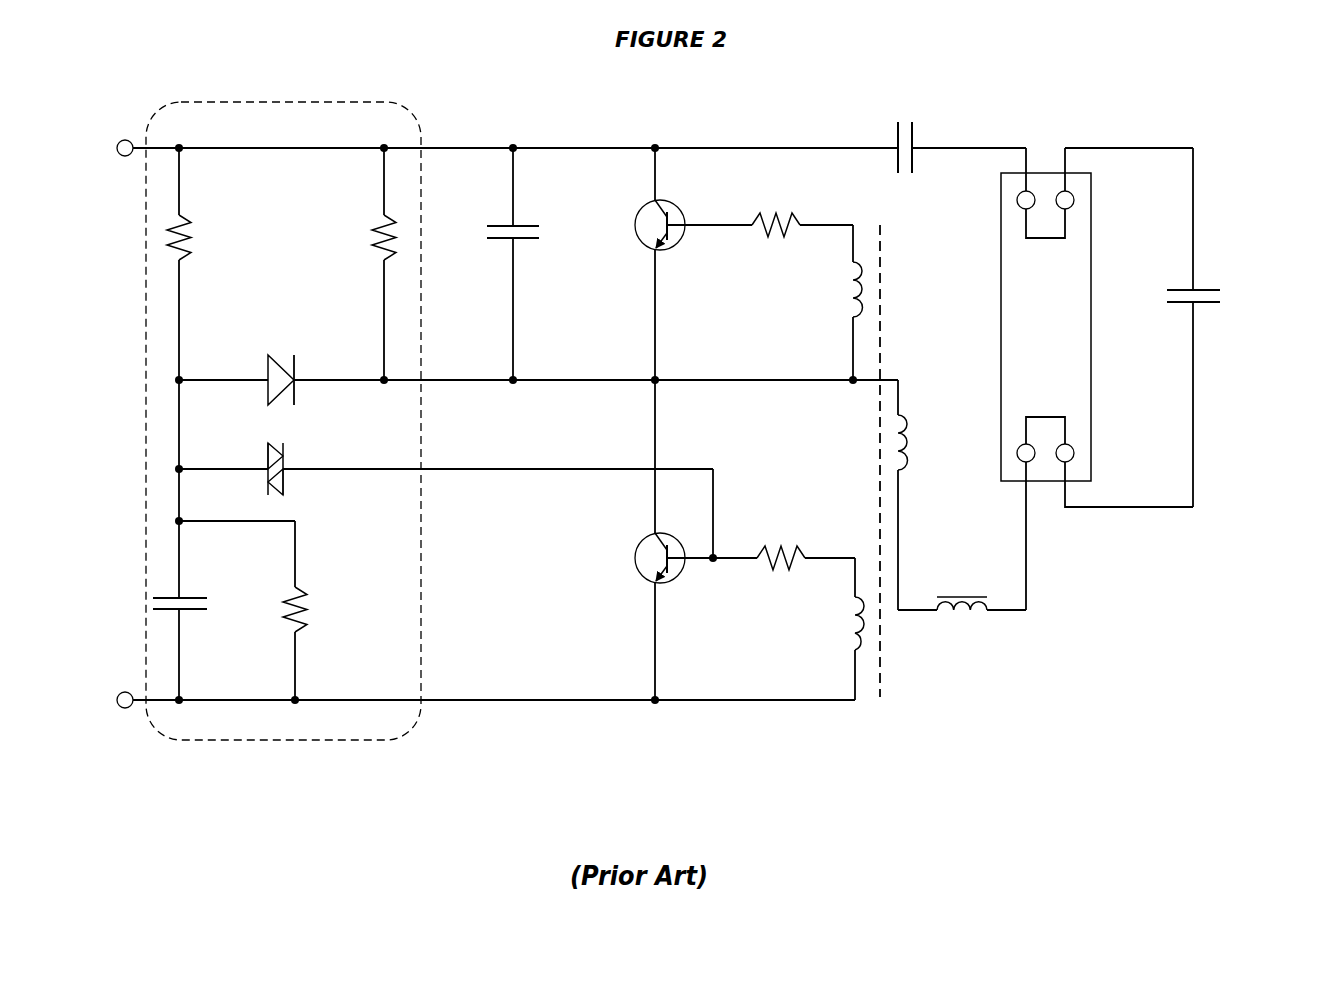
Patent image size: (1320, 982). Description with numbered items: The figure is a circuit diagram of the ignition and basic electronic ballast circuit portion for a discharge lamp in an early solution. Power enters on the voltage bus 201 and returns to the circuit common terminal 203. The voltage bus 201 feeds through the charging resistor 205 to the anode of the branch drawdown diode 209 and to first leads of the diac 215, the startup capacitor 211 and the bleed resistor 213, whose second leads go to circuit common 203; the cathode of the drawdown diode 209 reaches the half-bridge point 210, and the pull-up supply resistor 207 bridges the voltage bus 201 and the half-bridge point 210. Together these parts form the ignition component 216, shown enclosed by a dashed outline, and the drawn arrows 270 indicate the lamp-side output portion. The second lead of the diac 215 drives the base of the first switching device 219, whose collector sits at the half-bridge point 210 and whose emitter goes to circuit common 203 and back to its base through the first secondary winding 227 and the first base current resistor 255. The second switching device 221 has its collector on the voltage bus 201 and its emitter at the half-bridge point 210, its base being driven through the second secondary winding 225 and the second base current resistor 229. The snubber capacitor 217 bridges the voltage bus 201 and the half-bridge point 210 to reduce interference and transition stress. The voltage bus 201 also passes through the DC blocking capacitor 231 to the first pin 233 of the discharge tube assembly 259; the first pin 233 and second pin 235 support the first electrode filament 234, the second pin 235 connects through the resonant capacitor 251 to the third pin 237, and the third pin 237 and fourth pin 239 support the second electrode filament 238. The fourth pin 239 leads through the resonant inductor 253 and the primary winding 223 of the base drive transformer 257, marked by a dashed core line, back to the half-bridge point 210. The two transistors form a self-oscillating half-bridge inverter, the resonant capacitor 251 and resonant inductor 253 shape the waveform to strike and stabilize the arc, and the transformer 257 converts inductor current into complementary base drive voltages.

The voltage bus 201 is at (112, 148).
The circuit common terminal 203 is at (112, 700).
The charging resistor 205 is at (193, 216).
The pull-up supply resistor 207 is at (398, 216).
The branch drawdown diode 209 is at (281, 386).
The half-bridge point 210 is at (457, 382).
The startup capacitor 211 is at (193, 582).
The bleed resistor 213 is at (310, 588).
The diac 215 is at (256, 475).
The ignition component 216 is at (424, 734).
The snubber capacitor 217 is at (527, 211).
The first switching device 219 is at (653, 571).
The second switching device 221 is at (653, 238).
The primary winding 223 is at (916, 442).
The second secondary winding 225 is at (838, 295).
The first secondary winding 227 is at (838, 629).
The second base current resistor 229 is at (769, 238).
The DC blocking capacitor 231 is at (885, 154).
The first pin 233 is at (1014, 183).
The first electrode filament 234 is at (1045, 223).
The second pin 235 is at (1079, 183).
The third pin 237 is at (1077, 472).
The second electrode filament 238 is at (1045, 430).
The fourth pin 239 is at (1017, 472).
The resonant capacitor 251 is at (1208, 275).
The resonant inductor 253 is at (961, 616).
The first base current resistor 255 is at (772, 571).
The base drive transformer 257 is at (899, 666).
The discharge tube assembly 259 is at (1100, 332).
The output circuit 270 is at (1159, 554).